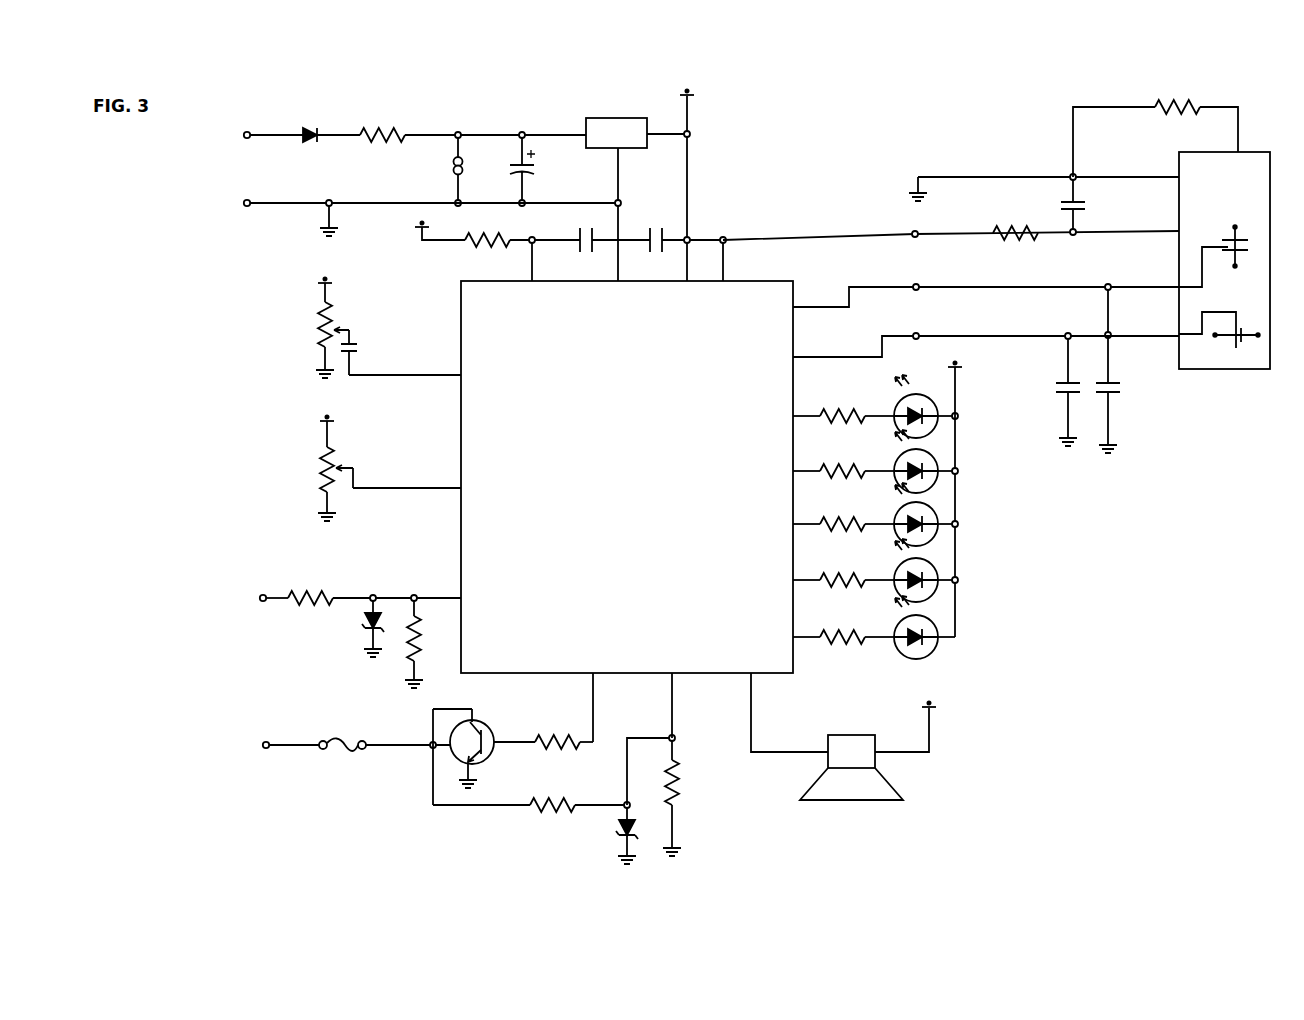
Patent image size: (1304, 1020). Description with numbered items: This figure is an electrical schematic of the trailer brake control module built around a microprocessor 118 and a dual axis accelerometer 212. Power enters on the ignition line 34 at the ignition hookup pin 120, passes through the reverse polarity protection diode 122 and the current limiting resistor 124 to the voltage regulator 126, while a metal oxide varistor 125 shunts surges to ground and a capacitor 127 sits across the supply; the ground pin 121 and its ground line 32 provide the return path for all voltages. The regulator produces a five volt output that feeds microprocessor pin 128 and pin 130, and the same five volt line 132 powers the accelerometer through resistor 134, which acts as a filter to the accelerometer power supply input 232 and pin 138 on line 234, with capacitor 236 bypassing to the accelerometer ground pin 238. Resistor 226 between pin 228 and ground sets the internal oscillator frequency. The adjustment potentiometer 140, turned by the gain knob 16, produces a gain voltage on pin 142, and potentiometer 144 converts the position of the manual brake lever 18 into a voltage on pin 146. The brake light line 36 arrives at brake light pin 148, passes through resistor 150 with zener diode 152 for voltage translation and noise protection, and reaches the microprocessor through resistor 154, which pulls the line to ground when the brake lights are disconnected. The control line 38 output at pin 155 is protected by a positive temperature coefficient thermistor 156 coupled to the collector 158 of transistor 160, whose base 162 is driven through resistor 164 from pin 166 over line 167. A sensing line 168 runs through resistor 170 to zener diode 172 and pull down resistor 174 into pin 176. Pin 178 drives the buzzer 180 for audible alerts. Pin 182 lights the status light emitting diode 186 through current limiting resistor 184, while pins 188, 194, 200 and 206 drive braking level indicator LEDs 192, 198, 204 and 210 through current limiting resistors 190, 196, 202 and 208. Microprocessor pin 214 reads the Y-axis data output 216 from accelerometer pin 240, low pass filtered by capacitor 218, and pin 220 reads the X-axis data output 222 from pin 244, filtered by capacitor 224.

The gain knob 16 is at (354, 339).
The manual brake lever 18 is at (354, 471).
The ground line 32 is at (272, 203).
The ignition line 34 is at (274, 135).
The brake light line 36 is at (285, 598).
The control line 38 is at (295, 749).
The microprocessor 118 is at (627, 477).
The ignition hookup pin 120 is at (247, 132).
The ground pin 121 is at (250, 207).
The diode 122 is at (306, 127).
The current limiting resistor 124 is at (382, 127).
The metal oxide varistor 125 is at (453, 166).
The voltage regulator 126 is at (586, 120).
The capacitor 127 is at (538, 170).
The microprocessor pin 128 is at (687, 283).
The microprocessor pin 130 is at (723, 283).
The 5 volt line 132 is at (690, 159).
The resistor 134 is at (1016, 228).
The accelerometer pin 138 is at (1179, 231).
The adjustment potentiometer 140 is at (317, 326).
The microprocessor pin 142 is at (464, 375).
The potentiometer 144 is at (317, 466).
The microprocessor pin 146 is at (464, 488).
The brake light pin 148 is at (263, 602).
The resistor 150 is at (301, 602).
The zener diode 152 is at (368, 638).
The resistor 154 is at (427, 634).
The control module pin 155 is at (265, 742).
The positive temperature coefficient thermistor 156 is at (350, 754).
The collector 158 is at (473, 712).
The transistor 160 is at (489, 727).
The base 162 is at (489, 756).
The resistor 164 is at (559, 734).
The microprocessor pin 166 is at (592, 672).
The line 167 is at (594, 712).
The line 168 is at (444, 806).
The resistor 170 is at (542, 810).
The zener diode 172 is at (620, 828).
The resistor 174 is at (679, 801).
The microprocessor pin 176 is at (670, 672).
The microprocessor pin 178 is at (744, 667).
The buzzer 180 is at (816, 786).
The microprocessor pin 182 is at (787, 416).
The current limiting resistor 184 is at (824, 410).
The light emitting diode 186 is at (937, 409).
The microprocessor pin 188 is at (787, 471).
The current limiting resistor 190 is at (824, 467).
The LED 192 is at (942, 458).
The microprocessor pin 194 is at (787, 524).
The current limiting resistor 196 is at (824, 521).
The LED 198 is at (942, 511).
The microprocessor pin 200 is at (787, 580).
The current limiting resistor 202 is at (824, 577).
The LED 204 is at (942, 567).
The microprocessor pin 206 is at (787, 637).
The current limiting resistor 208 is at (824, 635).
The LED 210 is at (937, 650).
The accelerometer 212 is at (1264, 369).
The microprocessor pin 214 is at (793, 307).
The Y-axis data output 216 is at (1174, 286).
The capacitor 218 is at (1119, 392).
The microprocessor pin 220 is at (793, 357).
The X-axis data output 222 is at (1174, 334).
The capacitor 224 is at (1057, 386).
The resistor 226 is at (1172, 112).
The accelerometer pin 228 is at (1238, 152).
The power supply input 232 is at (916, 232).
The line 234 is at (1104, 234).
The capacitor 236 is at (1086, 203).
The ground pin 238 is at (915, 188).
The Y-axis data output pin 240 is at (916, 287).
The X-axis data output pin 244 is at (916, 336).